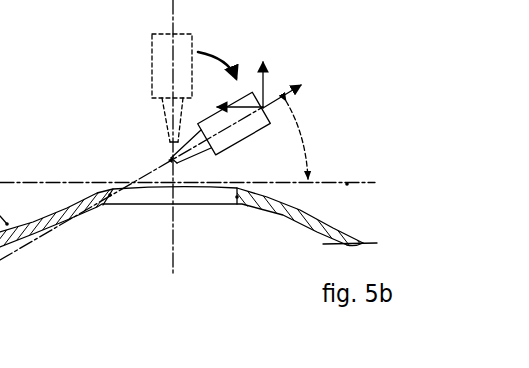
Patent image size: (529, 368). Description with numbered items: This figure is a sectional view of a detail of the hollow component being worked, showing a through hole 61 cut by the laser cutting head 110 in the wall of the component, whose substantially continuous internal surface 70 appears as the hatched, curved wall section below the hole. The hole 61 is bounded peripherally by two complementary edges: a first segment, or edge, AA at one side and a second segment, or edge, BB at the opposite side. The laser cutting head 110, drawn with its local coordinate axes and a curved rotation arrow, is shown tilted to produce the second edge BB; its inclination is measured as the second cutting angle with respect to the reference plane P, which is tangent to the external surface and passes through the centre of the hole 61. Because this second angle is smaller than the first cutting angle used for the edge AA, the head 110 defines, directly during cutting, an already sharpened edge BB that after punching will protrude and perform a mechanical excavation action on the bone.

The laser cutting head 110 is at (213, 123).
The through hole 61 is at (163, 197).
The internal surface 70 is at (59, 217).
The first segment, or edge AA is at (237, 197).
The second segment, or edge BB is at (110, 195).
The reference plane P is at (347, 184).